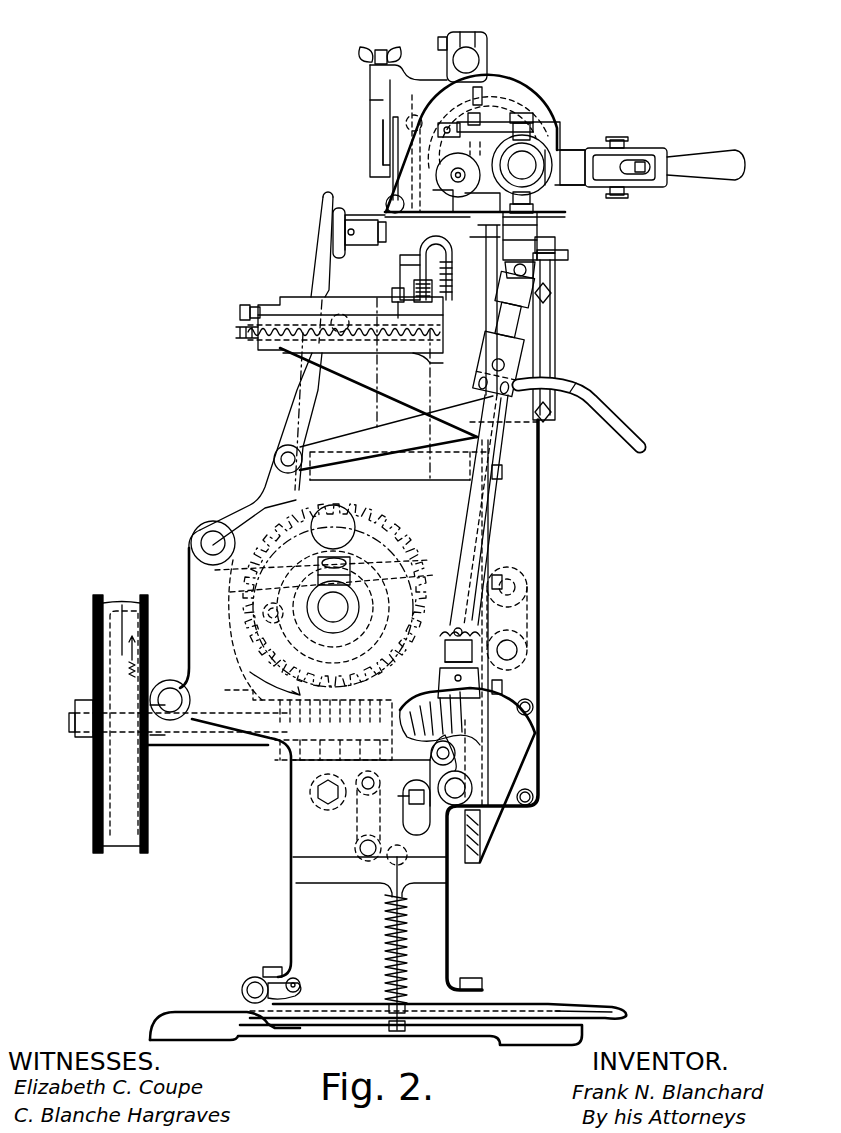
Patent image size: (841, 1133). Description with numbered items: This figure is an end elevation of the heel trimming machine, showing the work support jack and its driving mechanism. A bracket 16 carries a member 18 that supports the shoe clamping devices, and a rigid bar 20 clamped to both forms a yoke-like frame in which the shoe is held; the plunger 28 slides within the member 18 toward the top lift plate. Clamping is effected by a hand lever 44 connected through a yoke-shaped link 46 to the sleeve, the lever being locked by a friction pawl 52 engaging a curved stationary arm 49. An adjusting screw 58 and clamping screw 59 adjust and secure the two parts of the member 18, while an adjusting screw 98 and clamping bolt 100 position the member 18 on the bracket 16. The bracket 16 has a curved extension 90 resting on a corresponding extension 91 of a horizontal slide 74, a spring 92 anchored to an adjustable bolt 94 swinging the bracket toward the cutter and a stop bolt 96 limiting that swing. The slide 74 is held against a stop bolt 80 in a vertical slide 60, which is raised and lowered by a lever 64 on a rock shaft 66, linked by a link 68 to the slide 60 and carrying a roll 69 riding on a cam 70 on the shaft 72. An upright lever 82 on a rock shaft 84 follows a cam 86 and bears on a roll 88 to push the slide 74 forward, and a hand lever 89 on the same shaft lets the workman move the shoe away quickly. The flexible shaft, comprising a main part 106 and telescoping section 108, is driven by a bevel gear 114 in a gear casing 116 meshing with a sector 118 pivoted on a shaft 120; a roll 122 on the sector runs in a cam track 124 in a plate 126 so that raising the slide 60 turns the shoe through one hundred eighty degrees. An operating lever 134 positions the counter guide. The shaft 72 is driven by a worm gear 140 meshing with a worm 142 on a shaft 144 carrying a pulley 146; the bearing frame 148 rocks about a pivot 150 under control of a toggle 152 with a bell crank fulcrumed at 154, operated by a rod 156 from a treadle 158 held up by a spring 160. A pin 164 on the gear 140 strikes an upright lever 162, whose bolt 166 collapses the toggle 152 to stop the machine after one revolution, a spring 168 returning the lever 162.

The bracket 16 is at (470, 236).
The member 18 is at (430, 101).
The rigid bar 20 is at (538, 74).
The plunger 28 is at (573, 165).
The hand lever 44 is at (732, 158).
The yoke-shaped link 46 is at (550, 125).
The stationary arm 49 is at (588, 160).
The friction pawl 52 is at (621, 163).
The adjusting screw 58 is at (470, 150).
The clamping screw 59 is at (452, 128).
The slide 60 is at (532, 595).
The lever 64 is at (237, 522).
The rock shaft 66 is at (204, 538).
The link 68 is at (527, 613).
The roll 69 is at (352, 548).
The cam 70 is at (300, 572).
The shaft 72 is at (333, 593).
The horizontal slide 74 is at (278, 297).
The stop bolt 80 is at (240, 312).
The upright lever 82 is at (293, 389).
The rock shaft 84 is at (279, 455).
The cam 86 is at (265, 715).
The roll 88 is at (352, 318).
The hand lever 89 is at (642, 446).
The extension 90 is at (549, 277).
The extension 91 is at (551, 344).
The spring 92 is at (252, 352).
The adjustable bolt 94 is at (250, 334).
The stop bolt 96 is at (398, 290).
The adjusting screw 98 is at (333, 218).
The clamping bolt 100 is at (386, 201).
The main part of flexible shaft 106 is at (492, 486).
The telescoping section 108 is at (513, 318).
The bevel gear 114 is at (540, 704).
The gear casing 116 is at (535, 752).
The sector 118 is at (480, 728).
The shaft 120 is at (473, 798).
The roll 122 is at (455, 757).
The cam track 124 is at (490, 674).
The plate 126 is at (475, 638).
The operating lever 134 is at (370, 134).
The worm gear 140 is at (228, 593).
The worm 142 is at (300, 768).
The shaft 144 is at (98, 748).
The pulley 146 is at (103, 636).
The bearing frame 148 is at (167, 748).
The pivot 150 is at (160, 698).
The toggle 152 is at (380, 805).
The fulcrum 154 is at (350, 848).
The rod 156 is at (395, 914).
The treadle 158 is at (614, 1006).
The spring 160 is at (404, 959).
The upright lever 162 is at (480, 812).
The pin 164 is at (345, 640).
The bolt 166 is at (420, 812).
The spring 168 is at (358, 792).